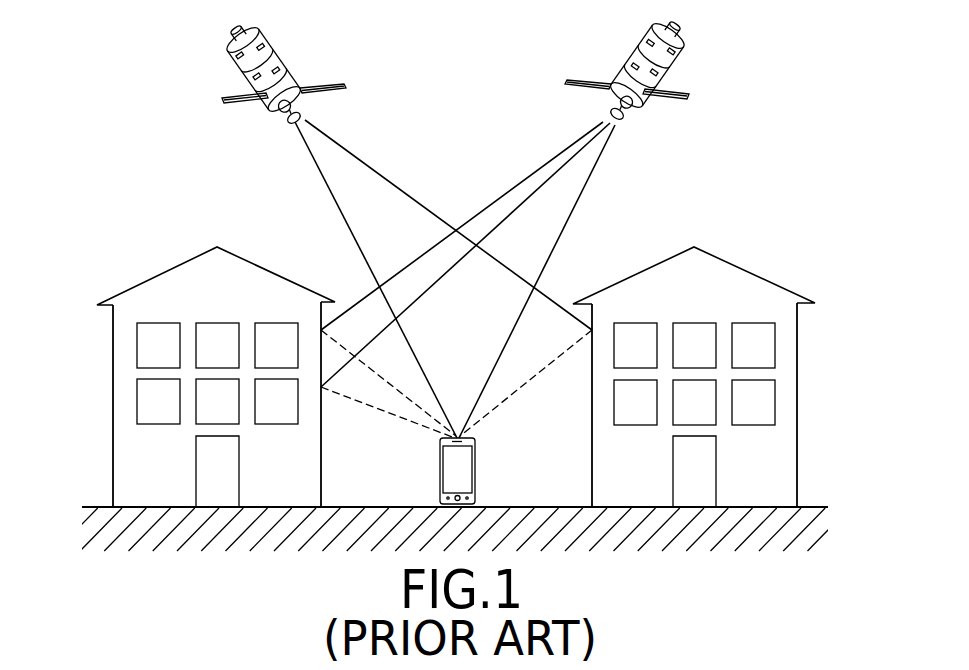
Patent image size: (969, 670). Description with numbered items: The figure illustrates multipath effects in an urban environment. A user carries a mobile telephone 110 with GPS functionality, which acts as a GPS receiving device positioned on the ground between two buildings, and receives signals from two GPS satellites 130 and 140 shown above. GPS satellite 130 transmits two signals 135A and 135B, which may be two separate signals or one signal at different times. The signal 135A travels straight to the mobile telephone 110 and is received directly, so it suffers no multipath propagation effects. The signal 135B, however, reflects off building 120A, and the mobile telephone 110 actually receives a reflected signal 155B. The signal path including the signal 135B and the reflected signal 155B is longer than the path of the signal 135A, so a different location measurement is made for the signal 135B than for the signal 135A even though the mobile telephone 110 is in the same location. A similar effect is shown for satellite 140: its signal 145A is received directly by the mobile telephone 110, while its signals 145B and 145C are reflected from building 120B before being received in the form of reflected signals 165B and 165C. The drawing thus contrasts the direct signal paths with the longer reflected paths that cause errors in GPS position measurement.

The mobile telephone 110 is at (476, 466).
The building 120A is at (797, 393).
The building 120B is at (113, 392).
The GPS satellite 130 is at (290, 62).
The GPS satellite 140 is at (676, 56).
The signal 135A is at (331, 193).
The signal 135B is at (388, 181).
The signal 145A is at (585, 195).
The signal 145B is at (538, 188).
The signal 145C is at (493, 198).
The reflected signal 155B is at (543, 369).
The reflected signal 165B is at (377, 408).
The reflected signal 165C is at (390, 383).